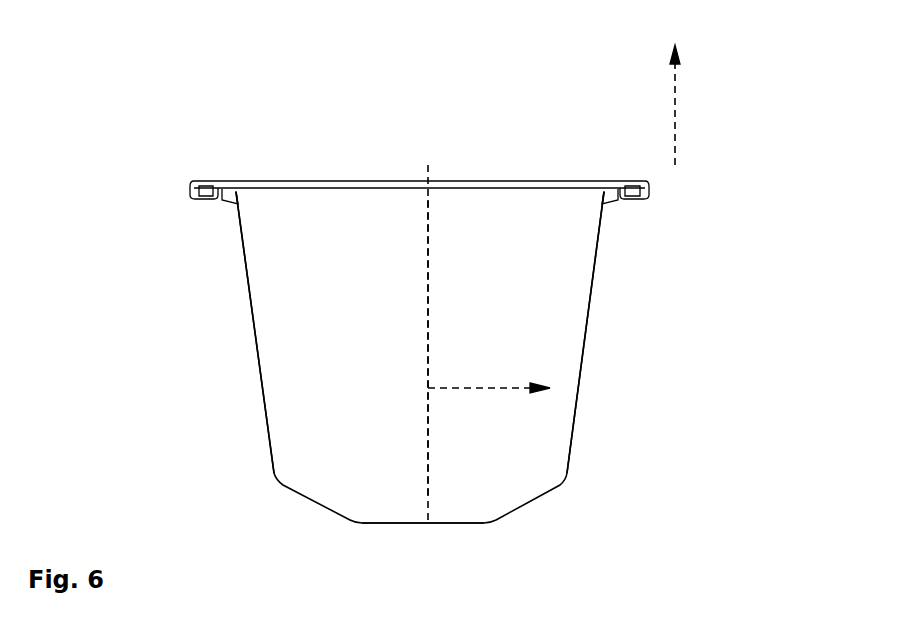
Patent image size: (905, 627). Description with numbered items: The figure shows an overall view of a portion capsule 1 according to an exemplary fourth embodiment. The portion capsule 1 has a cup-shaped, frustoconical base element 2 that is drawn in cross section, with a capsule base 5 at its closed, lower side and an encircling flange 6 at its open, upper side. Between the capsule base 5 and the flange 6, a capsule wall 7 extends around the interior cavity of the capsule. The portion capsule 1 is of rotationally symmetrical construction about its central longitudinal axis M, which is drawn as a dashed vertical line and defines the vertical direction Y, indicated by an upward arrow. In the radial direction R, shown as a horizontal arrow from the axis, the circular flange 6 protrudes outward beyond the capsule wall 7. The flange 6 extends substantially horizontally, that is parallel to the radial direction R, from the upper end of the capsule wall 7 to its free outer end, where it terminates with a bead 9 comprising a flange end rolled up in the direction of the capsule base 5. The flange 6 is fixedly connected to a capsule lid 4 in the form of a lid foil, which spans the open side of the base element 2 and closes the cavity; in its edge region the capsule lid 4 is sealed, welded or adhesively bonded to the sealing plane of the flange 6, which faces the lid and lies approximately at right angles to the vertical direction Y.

The portion capsule 1 is at (390, 317).
The base element 2 is at (250, 295).
The capsule lid 4 is at (364, 181).
The capsule base 5 is at (386, 526).
The flange 6 is at (632, 199).
The capsule wall 7 is at (585, 354).
The bead 9 is at (203, 199).
The central longitudinal axis M is at (428, 276).
The radial direction R is at (522, 390).
The vertical direction Y is at (676, 92).